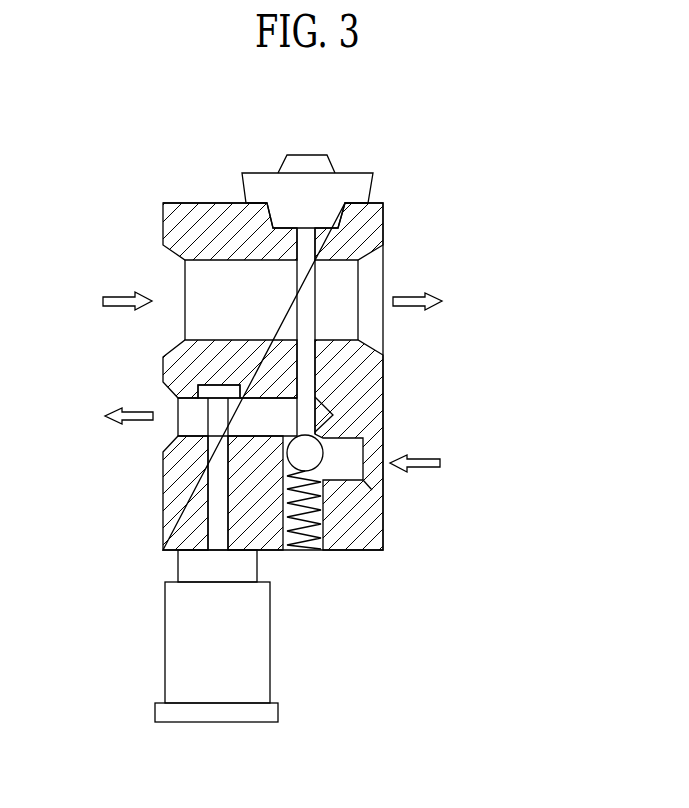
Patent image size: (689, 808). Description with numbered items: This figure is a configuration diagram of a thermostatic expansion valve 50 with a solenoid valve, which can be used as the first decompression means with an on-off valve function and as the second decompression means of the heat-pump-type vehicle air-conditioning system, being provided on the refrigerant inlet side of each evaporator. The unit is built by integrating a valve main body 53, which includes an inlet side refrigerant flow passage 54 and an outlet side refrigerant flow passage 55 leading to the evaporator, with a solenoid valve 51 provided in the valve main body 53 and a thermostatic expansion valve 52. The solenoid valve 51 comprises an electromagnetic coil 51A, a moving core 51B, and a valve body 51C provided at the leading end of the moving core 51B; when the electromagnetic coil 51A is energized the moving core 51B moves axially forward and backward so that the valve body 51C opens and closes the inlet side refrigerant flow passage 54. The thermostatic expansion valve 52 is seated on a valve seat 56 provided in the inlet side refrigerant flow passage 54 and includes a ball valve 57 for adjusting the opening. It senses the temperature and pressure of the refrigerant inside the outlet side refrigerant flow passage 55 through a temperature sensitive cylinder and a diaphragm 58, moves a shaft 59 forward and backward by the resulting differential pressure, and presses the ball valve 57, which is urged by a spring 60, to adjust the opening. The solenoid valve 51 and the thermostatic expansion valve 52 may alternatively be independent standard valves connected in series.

The thermostatic expansion valve with a solenoid valve 50 is at (323, 350).
The solenoid valve 51 is at (198, 553).
The electromagnetic coil 51A is at (255, 648).
The moving core 51B is at (215, 505).
The valve body 51C is at (200, 425).
The thermostatic expansion valve 52 is at (408, 498).
The valve main body 53 is at (182, 366).
The inlet side refrigerant flow passage 54 is at (258, 412).
The outlet side refrigerant flow passage 55 is at (202, 280).
The valve seat 56 is at (340, 414).
The ball valve 57 is at (307, 452).
The diaphragm 58 is at (264, 187).
The shaft 59 is at (307, 290).
The spring 60 is at (311, 544).